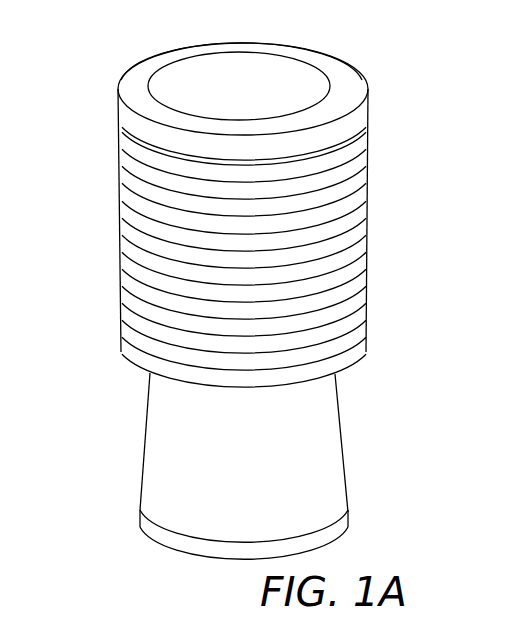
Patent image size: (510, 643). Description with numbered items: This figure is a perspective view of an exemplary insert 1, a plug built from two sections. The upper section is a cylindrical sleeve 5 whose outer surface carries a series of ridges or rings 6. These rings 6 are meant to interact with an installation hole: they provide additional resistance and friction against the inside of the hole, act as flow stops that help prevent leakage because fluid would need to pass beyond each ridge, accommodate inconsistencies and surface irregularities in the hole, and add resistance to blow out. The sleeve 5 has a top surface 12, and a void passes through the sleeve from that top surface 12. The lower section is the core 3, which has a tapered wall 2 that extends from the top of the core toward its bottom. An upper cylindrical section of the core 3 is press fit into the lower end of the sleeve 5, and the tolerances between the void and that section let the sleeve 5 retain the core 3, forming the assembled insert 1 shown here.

The insert 1 is at (220, 291).
The tapered wall 2 is at (340, 448).
The core 3 is at (225, 466).
The cylindrical sleeve 5 is at (223, 205).
The ridges or rings 6 is at (121, 213).
The top surface 12 is at (142, 77).